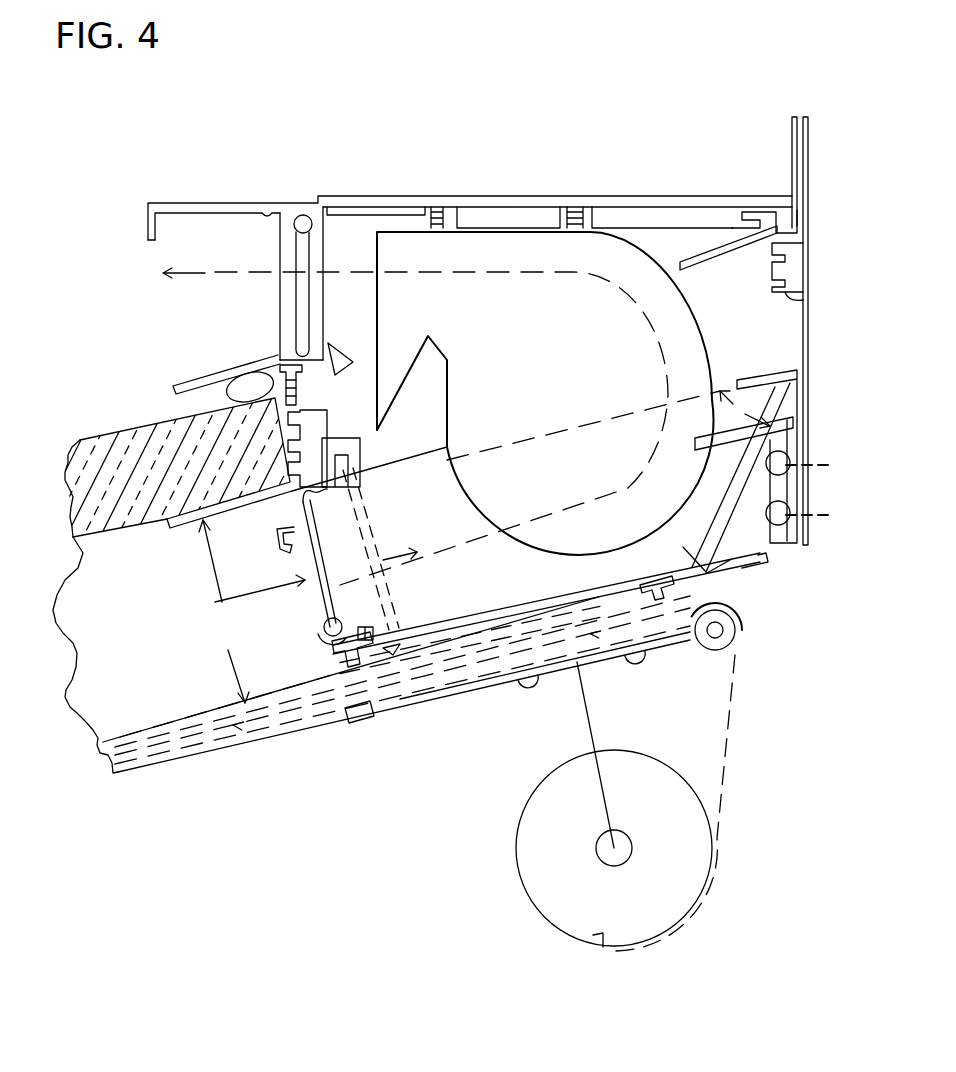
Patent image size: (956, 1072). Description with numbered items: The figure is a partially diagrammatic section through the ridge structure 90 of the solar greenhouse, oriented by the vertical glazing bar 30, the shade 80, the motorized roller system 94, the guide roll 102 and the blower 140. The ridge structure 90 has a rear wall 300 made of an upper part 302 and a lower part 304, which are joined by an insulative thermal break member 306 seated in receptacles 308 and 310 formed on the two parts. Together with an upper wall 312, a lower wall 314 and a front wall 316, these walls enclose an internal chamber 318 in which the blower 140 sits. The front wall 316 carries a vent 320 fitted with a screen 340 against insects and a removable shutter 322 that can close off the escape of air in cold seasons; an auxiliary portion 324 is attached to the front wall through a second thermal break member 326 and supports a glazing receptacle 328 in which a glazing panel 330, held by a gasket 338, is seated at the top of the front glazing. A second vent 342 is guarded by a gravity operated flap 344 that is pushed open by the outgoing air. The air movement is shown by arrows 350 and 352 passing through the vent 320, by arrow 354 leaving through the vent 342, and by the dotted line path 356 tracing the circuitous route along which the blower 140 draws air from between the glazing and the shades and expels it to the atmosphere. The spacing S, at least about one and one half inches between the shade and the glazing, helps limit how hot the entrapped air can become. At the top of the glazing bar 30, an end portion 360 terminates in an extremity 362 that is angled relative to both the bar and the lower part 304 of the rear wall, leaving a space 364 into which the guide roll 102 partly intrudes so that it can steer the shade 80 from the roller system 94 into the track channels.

The vertical glazing bar 30 is at (187, 762).
The shade 80 is at (733, 660).
The ridge structure 90 is at (711, 190).
The motorized roller system 94 is at (692, 765).
The guide roll 102 is at (728, 652).
The blower 140 is at (605, 263).
The rear wall 300 is at (811, 340).
The upper part 302 is at (809, 143).
The lower part 304 is at (800, 437).
The thermal break member 306 is at (786, 263).
The receptacle 308 is at (792, 242).
The receptacle 310 is at (788, 300).
The upper wall 312 is at (517, 195).
The lower wall 314 is at (528, 607).
The front wall 316 is at (340, 652).
The internal chamber 318 is at (673, 218).
The vent 320 is at (312, 512).
The removable shutter 322 is at (308, 562).
The auxiliary portion 324 is at (300, 388).
The thermal break member 326 is at (314, 430).
The glazing receptacle 328 is at (232, 360).
The glazing panel 330 is at (130, 440).
The gasket 338 is at (226, 389).
The screen 340 is at (347, 530).
The second vent 342 is at (336, 292).
The gravity operated flap 344 is at (306, 247).
The arrow 350 is at (304, 590).
The arrow 352 is at (412, 557).
The arrow 354 is at (164, 268).
The dotted line path 356 is at (648, 468).
The end portion 360 is at (728, 603).
The extremity 362 is at (713, 360).
The space 364 is at (698, 575).
The spacing S is at (224, 611).
The edge E is at (745, 409).